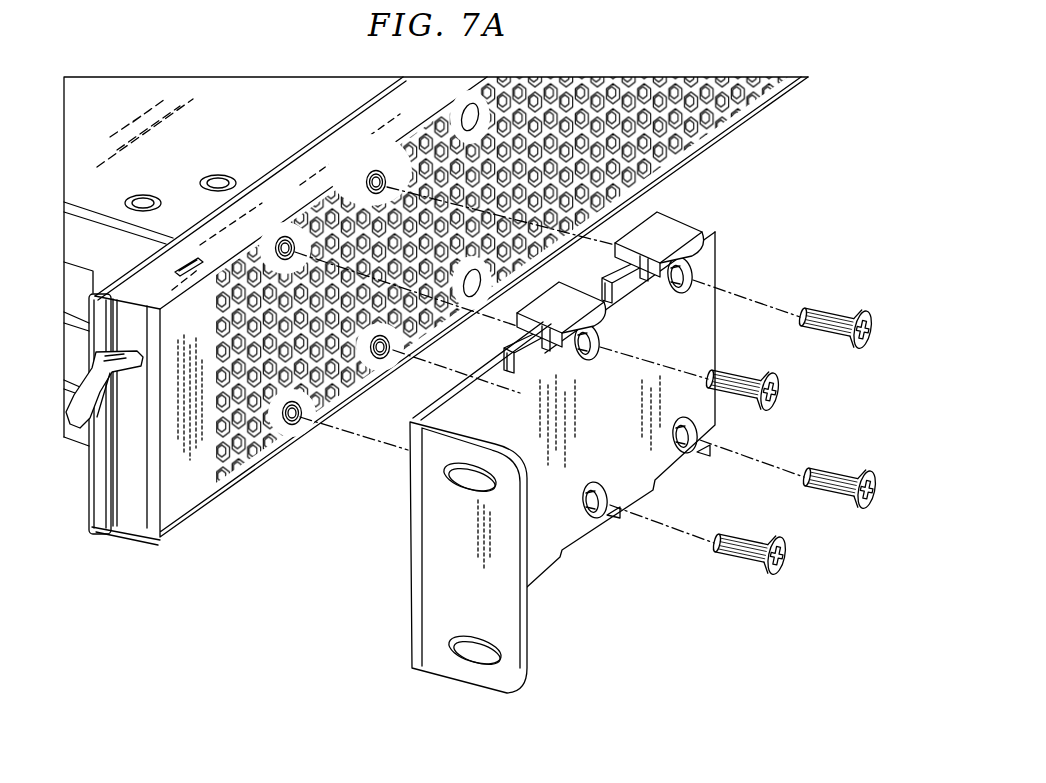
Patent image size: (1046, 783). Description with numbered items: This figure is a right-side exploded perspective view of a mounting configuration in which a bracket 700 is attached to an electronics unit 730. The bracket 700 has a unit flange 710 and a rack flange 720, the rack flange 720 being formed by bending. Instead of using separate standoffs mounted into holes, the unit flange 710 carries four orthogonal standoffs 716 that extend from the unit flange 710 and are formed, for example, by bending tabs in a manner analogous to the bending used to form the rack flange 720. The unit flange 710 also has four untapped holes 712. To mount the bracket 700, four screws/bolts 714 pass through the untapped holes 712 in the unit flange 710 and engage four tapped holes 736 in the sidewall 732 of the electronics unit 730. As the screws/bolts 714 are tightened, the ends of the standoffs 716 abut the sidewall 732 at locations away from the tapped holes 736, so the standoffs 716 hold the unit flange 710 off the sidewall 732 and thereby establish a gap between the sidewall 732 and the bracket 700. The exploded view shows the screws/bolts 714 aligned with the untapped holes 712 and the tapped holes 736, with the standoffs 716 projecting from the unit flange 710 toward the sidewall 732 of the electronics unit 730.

The bracket 700 is at (627, 468).
The unit flange 710 is at (703, 350).
The untapped holes 712 is at (680, 448).
The screws/bolts 714 is at (825, 315).
The standoffs 716 is at (662, 218).
The rack flange 720 is at (503, 620).
The electronics unit 730 is at (100, 558).
The sidewall 732 is at (180, 510).
The tapped holes 736 is at (370, 178).